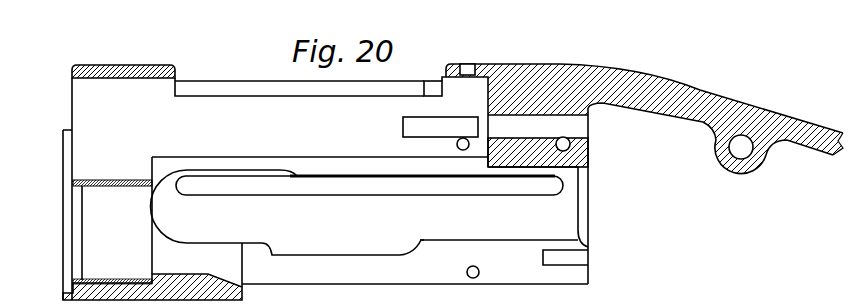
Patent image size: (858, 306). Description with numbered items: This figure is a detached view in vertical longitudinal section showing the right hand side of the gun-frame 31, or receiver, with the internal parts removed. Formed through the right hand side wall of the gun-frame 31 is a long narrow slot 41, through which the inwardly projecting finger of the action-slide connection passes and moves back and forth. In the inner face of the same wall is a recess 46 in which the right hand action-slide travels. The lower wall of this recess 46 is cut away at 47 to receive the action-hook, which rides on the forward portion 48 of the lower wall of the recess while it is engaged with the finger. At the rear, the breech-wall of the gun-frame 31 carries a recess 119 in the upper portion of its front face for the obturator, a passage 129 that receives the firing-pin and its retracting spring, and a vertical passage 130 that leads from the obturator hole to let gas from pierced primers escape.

The gun-frame 31 is at (644, 113).
The slot 41 is at (307, 188).
The recess 46 is at (370, 196).
The cut-away 47 is at (368, 257).
The forward portion of the lower wall 48 is at (218, 243).
The recess 119 is at (487, 90).
The passage 129 is at (538, 143).
The vertical passage 130 is at (468, 62).